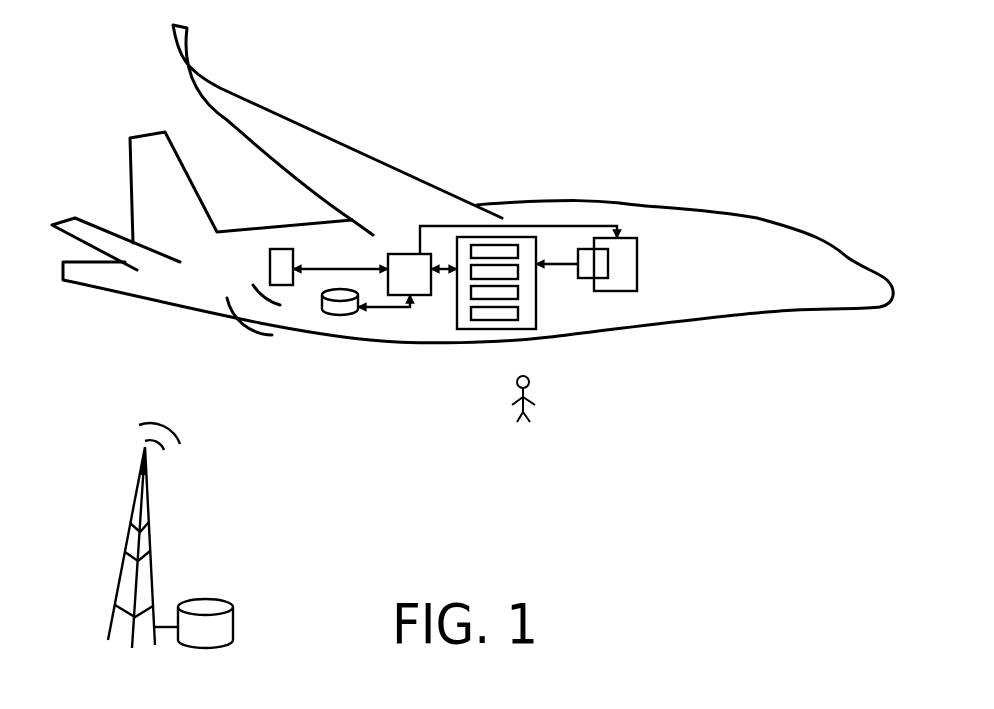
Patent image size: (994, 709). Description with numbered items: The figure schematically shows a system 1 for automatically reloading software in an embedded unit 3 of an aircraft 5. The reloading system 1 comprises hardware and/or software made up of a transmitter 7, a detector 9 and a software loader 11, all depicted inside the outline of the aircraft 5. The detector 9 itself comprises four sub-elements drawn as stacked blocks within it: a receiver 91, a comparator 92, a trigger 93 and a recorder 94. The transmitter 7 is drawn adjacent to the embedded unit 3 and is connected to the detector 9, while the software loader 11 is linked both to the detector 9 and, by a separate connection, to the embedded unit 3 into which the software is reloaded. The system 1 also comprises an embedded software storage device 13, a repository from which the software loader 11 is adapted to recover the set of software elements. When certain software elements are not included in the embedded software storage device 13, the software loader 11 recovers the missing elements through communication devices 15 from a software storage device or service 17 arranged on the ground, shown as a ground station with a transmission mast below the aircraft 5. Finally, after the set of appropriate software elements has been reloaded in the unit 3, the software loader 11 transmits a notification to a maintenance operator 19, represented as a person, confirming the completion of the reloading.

The system 1 is at (366, 454).
The embedded unit 3 is at (625, 238).
The aircraft 5 is at (767, 221).
The transmitter 7 is at (583, 278).
The detector 9 is at (476, 277).
The receiver 91 is at (508, 245).
The comparator 92 is at (470, 272).
The trigger 93 is at (470, 293).
The recorder 94 is at (518, 312).
The software loader 11 is at (398, 253).
The embedded software storage device 13 is at (335, 315).
The communication devices 15 is at (281, 249).
The software storage device or service 17 is at (212, 600).
The maintenance operator 19 is at (530, 387).